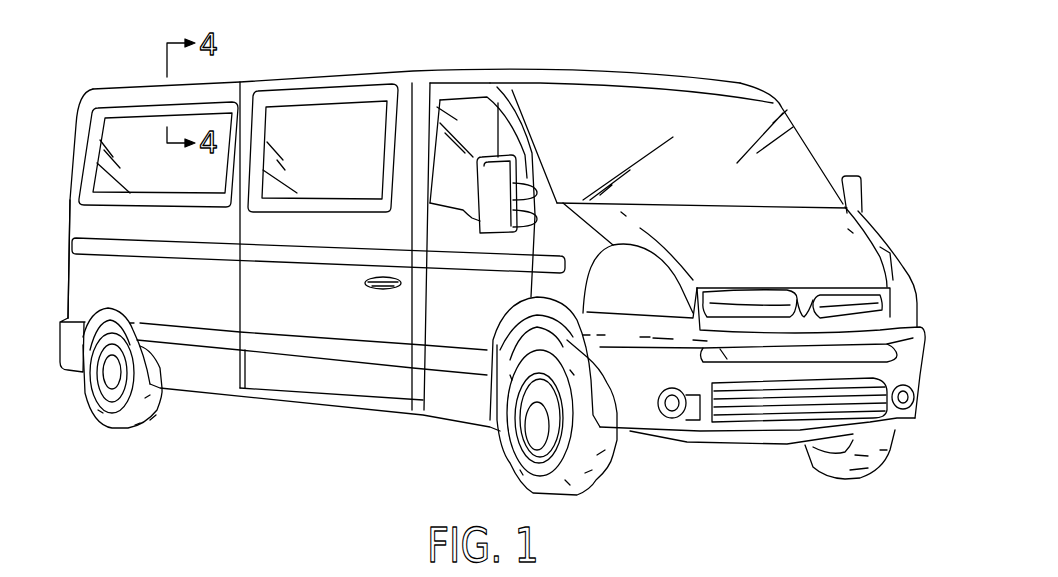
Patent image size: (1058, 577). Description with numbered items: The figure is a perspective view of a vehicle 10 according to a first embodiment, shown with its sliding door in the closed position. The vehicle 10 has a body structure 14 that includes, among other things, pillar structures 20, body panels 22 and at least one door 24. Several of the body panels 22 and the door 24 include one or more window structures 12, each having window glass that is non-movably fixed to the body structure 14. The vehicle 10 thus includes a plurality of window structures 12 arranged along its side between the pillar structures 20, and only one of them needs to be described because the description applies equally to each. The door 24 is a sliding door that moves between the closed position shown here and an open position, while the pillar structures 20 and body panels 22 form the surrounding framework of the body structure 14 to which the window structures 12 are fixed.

The vehicle 10 is at (678, 37).
The window structure 12 is at (133, 147).
The body structure 14 is at (412, 70).
The pillar structures 20 is at (237, 170).
The body panels 22 is at (110, 275).
The door 24 is at (310, 375).